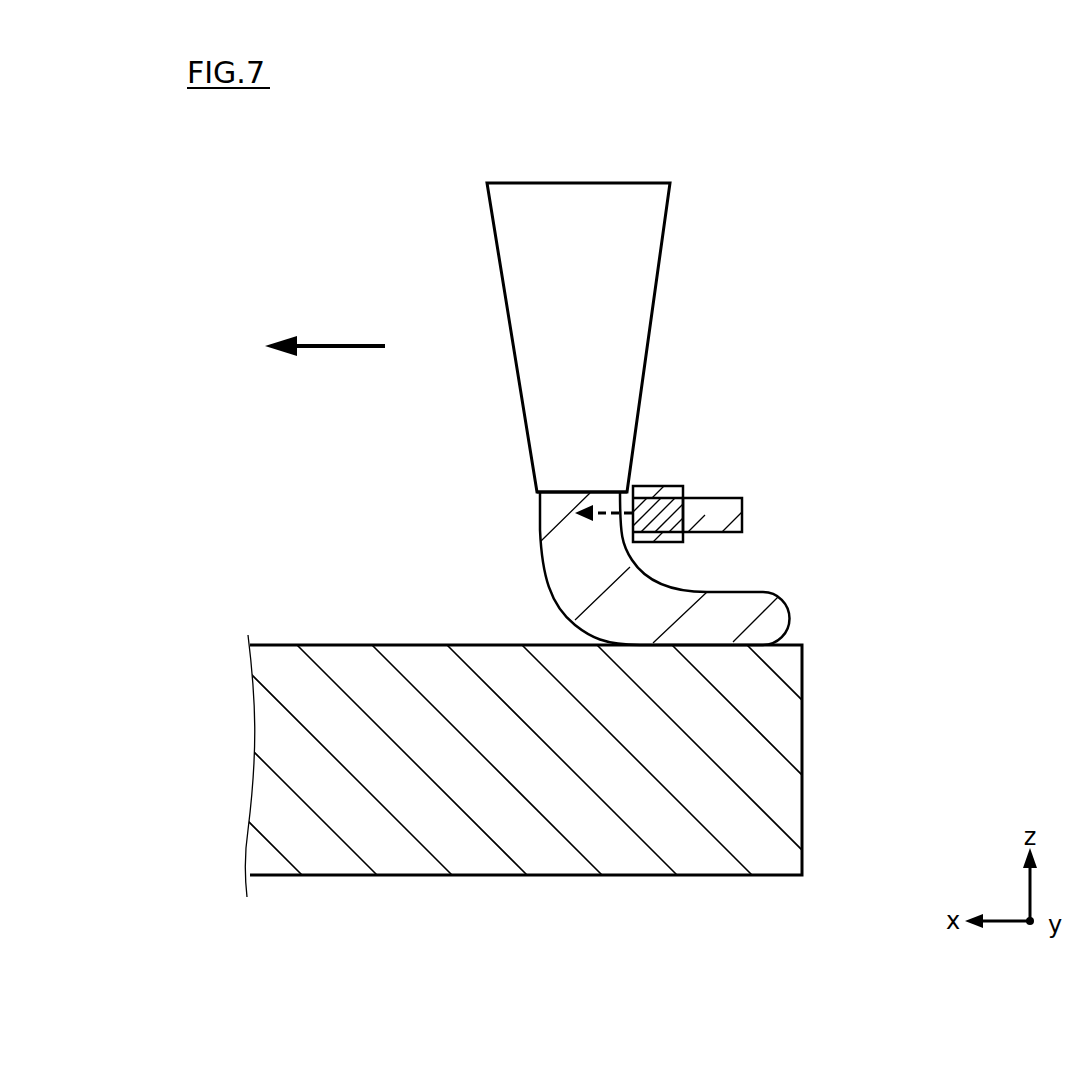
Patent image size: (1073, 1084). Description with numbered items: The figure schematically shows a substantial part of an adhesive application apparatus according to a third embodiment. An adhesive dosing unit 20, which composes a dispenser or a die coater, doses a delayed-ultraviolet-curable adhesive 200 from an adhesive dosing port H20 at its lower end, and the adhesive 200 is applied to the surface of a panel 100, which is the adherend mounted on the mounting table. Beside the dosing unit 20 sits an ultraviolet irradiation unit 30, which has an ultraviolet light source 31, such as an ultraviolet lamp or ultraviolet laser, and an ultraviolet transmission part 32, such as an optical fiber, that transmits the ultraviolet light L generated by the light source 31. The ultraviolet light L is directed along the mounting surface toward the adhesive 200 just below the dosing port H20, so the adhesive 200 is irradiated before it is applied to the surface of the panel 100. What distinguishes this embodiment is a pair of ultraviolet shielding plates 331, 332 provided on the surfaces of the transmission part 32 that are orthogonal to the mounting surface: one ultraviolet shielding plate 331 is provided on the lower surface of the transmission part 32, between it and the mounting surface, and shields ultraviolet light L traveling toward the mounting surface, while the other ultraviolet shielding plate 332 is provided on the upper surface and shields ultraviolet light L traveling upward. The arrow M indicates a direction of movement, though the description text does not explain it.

The adhesive dosing unit 20 is at (640, 195).
The adhesive dosing port H20 is at (511, 496).
The adhesive 200 is at (790, 607).
The panel 100 is at (785, 822).
The ultraviolet irradiation unit 30 is at (698, 464).
The ultraviolet light source 31 is at (678, 422).
The ultraviolet transmission part 32 is at (672, 485).
The ultraviolet shielding plate 331 is at (686, 541).
The ultraviolet shielding plate 332 is at (645, 490).
The ultraviolet light L is at (572, 516).
The movement direction M is at (340, 342).